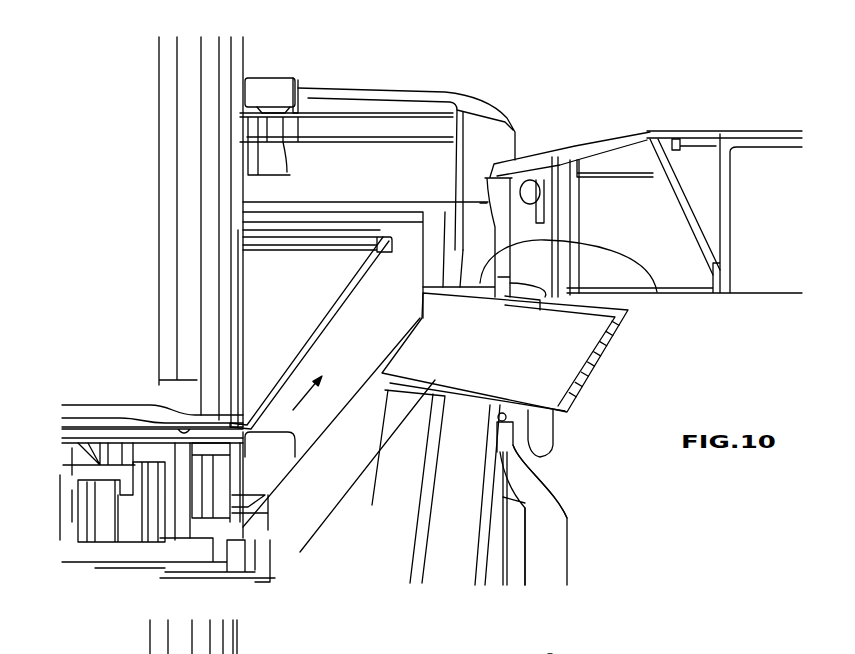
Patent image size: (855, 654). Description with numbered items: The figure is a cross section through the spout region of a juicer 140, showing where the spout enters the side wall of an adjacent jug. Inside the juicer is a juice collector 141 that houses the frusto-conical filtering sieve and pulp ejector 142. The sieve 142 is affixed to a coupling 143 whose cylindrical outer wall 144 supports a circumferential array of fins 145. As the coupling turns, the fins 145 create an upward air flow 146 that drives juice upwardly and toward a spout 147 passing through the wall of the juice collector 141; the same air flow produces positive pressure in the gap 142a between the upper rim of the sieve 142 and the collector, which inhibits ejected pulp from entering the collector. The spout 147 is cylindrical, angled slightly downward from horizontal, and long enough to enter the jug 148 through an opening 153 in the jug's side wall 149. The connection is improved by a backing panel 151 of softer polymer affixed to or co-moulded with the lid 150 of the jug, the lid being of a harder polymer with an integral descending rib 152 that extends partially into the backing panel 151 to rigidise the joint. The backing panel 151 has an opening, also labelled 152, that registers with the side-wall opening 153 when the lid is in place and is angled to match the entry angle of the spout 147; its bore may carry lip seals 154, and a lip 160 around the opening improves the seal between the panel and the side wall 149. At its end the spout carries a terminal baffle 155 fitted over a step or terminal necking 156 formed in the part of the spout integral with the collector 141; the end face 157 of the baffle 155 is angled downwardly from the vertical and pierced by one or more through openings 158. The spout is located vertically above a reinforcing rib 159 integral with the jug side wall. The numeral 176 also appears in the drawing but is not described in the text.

The juicer 140 is at (524, 49).
The juice collector 141 is at (333, 453).
The frusto-conical filtering sieve and pulp ejector 142 is at (330, 250).
The gap 142a is at (357, 227).
The coupling 143 is at (127, 447).
The cylindrical outer wall 144 is at (240, 452).
The fins 145 is at (263, 455).
The upward air flow 146 is at (305, 405).
The spout 147 is at (577, 250).
The jug 148 is at (766, 76).
The side wall 149 is at (513, 537).
The lid 150 is at (673, 120).
The backing panel 151 is at (660, 290).
The descending rib / opening 152 is at (523, 180).
The opening 153 is at (497, 410).
The lip seals 154 is at (540, 258).
The terminal baffle 155 is at (593, 373).
The step or terminal necking 156 is at (503, 383).
The end face 157 is at (567, 398).
The through openings 158 is at (613, 330).
The reinforcing rib 159 is at (543, 553).
The lip 160 is at (490, 413).
The lower housing 176 is at (550, 653).